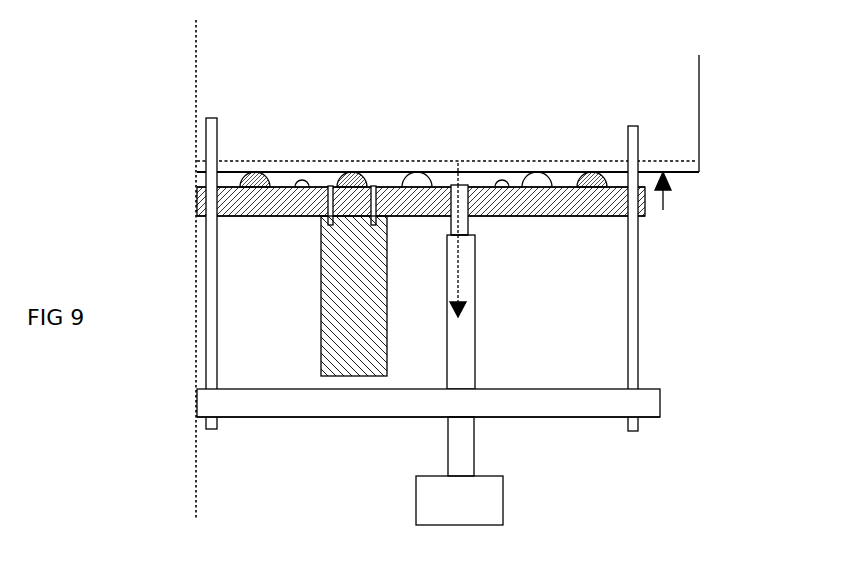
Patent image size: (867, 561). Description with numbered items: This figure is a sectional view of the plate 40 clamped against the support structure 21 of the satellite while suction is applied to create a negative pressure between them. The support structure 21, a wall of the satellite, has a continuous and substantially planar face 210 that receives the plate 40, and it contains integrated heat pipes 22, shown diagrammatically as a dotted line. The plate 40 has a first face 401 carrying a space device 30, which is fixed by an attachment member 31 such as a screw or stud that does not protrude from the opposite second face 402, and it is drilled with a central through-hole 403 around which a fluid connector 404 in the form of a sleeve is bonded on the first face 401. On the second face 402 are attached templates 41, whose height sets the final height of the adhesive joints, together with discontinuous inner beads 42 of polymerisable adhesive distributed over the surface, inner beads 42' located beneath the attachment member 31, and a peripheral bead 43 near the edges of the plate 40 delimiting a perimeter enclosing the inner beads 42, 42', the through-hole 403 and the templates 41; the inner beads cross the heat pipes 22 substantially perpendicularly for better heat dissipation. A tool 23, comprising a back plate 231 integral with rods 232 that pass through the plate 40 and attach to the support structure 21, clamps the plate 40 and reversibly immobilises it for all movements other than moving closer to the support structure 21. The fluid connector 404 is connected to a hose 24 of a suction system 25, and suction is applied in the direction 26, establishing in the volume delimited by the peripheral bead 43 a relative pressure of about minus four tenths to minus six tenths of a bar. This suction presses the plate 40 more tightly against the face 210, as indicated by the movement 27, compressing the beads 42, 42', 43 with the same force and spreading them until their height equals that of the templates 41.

The support structure 21 is at (699, 118).
The face 210 is at (233, 172).
The heat pipes 22 is at (683, 160).
The tool 23 is at (660, 398).
The back plate 231 is at (580, 417).
The rods 232 is at (638, 327).
The hose 24 is at (448, 453).
The suction system 25 is at (503, 492).
The suction direction 26 is at (457, 280).
The pressing movement 27 is at (667, 197).
The space device 30 is at (319, 327).
The attachment member 31 is at (376, 205).
The plate 40 is at (645, 216).
The first face 401 is at (573, 216).
The second face 402 is at (281, 186).
The through-hole 403 is at (463, 193).
The fluid connector 404 is at (470, 222).
The templates 41 is at (503, 181).
The inner beads 42 is at (482, 145).
The inner beads beneath attachment interfaces 42' is at (315, 139).
The peripheral bead 43 is at (593, 173).